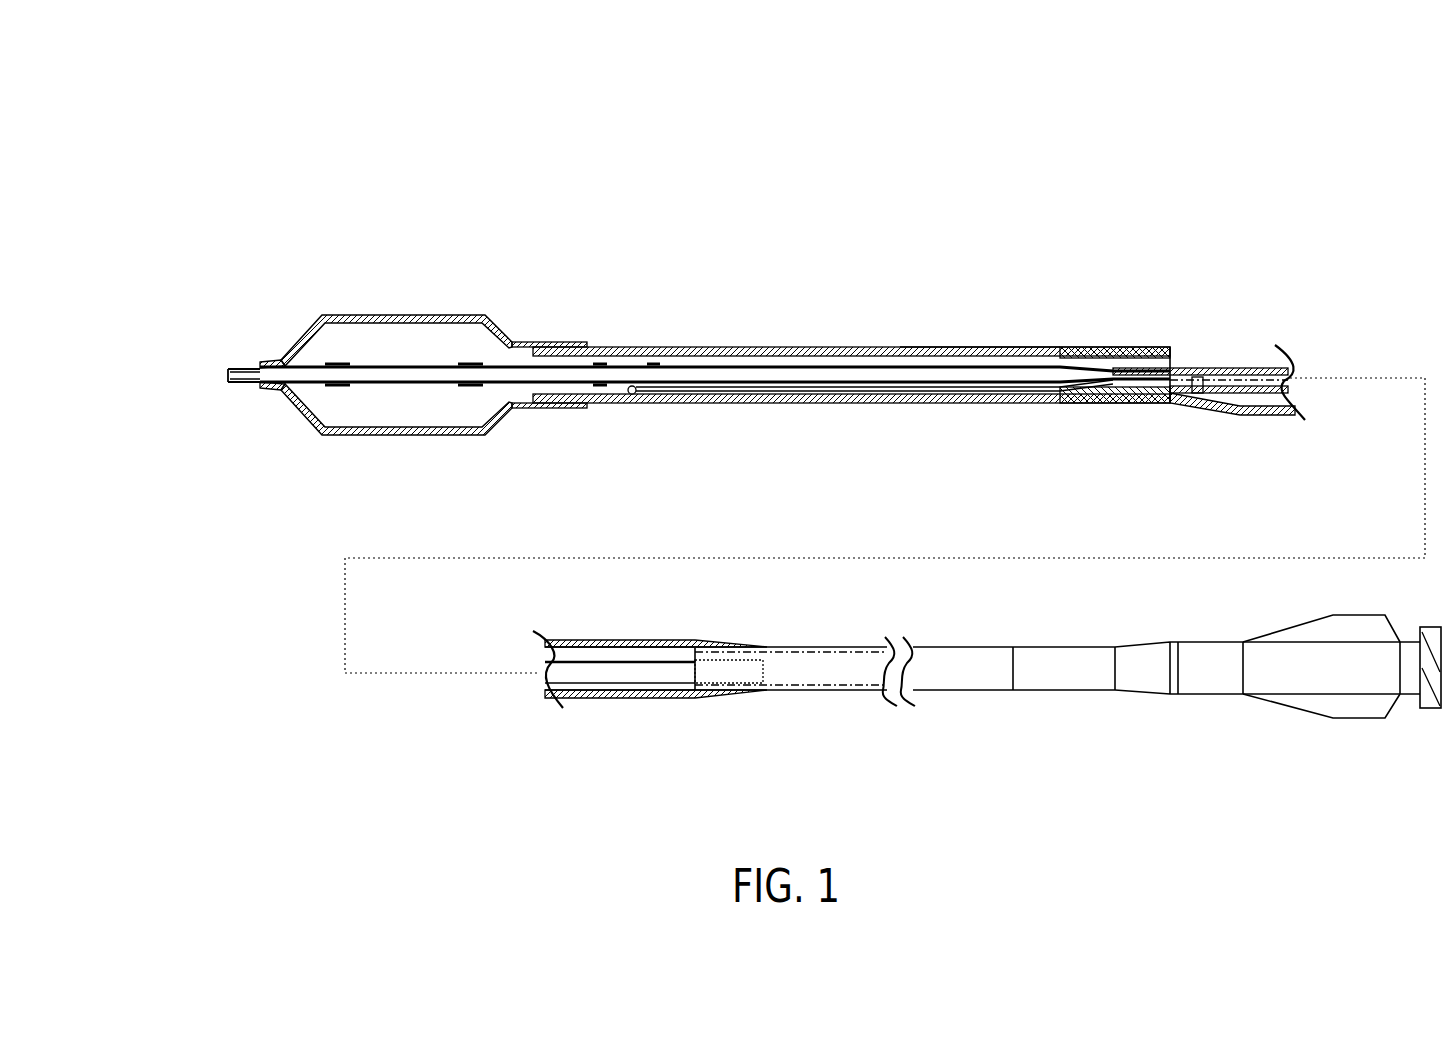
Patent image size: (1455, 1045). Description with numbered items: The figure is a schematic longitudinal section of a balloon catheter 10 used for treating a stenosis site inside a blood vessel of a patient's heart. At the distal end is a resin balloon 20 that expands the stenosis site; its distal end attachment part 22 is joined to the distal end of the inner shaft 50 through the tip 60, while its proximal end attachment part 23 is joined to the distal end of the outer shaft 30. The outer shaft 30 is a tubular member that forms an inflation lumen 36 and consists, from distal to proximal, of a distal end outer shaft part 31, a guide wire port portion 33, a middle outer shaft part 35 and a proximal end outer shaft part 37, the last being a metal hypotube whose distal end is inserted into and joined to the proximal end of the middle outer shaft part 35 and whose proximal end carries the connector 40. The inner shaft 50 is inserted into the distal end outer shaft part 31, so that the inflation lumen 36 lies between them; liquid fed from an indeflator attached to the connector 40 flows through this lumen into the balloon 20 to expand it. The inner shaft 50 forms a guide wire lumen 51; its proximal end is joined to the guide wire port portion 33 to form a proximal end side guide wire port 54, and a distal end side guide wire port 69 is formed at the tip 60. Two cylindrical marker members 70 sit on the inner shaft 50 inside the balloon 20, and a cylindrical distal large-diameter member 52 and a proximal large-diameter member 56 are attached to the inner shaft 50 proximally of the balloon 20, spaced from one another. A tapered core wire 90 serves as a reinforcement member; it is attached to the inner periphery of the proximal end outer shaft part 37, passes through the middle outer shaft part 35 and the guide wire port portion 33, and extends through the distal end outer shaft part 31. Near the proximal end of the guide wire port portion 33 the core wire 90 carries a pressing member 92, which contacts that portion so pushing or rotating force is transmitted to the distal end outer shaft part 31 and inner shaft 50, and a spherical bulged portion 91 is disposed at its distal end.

The balloon catheter 10 is at (888, 253).
The balloon 20 is at (405, 315).
The distal end attachment part 22 is at (275, 360).
The proximal end attachment part 23 is at (548, 345).
The outer shaft 30 is at (798, 347).
The distal end outer shaft part 31 is at (820, 405).
The guide wire port portion 33 is at (1117, 405).
The middle outer shaft part 35 is at (1240, 415).
The inflation lumen 36 is at (967, 347).
The proximal end outer shaft part 37 is at (968, 692).
The connector 40 is at (1332, 720).
The inner shaft 50 is at (705, 356).
The guide wire lumen 51 is at (1040, 355).
The distal large-diameter member 52 is at (600, 407).
The proximal end side guide wire port 54 is at (1185, 345).
The proximal large-diameter member 56 is at (652, 362).
The tip 60 is at (243, 365).
The distal end side guide wire port 69 is at (230, 381).
The marker members 70 is at (330, 387).
The core wire 90 is at (1247, 355).
The bulged portion 91 is at (638, 400).
The pressing member 92 is at (1198, 395).